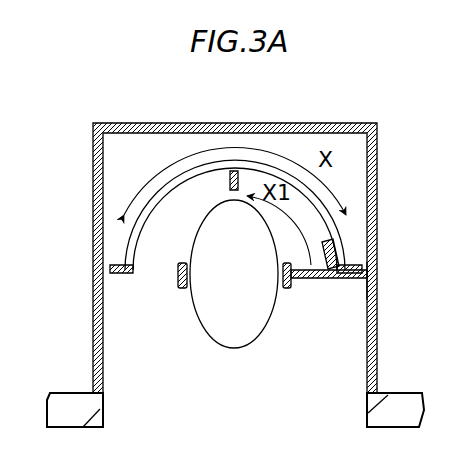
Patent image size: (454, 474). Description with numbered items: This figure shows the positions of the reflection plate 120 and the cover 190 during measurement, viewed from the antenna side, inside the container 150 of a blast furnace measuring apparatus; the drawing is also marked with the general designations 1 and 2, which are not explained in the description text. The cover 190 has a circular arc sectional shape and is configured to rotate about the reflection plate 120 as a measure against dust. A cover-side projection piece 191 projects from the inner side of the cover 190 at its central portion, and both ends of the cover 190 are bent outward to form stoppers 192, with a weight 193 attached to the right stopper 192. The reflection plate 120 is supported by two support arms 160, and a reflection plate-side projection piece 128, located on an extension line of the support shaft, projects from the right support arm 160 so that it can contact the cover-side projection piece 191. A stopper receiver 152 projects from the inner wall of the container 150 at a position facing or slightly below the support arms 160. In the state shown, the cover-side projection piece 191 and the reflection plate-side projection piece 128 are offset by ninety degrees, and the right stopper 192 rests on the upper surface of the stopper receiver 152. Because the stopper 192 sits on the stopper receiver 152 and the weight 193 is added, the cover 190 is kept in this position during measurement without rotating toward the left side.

The base 1 is at (68, 427).
The rotary apparatus 2 is at (186, 405).
The reflection plate 120 is at (250, 334).
The reflection plate-side projection piece 128 is at (300, 280).
The container 150 is at (163, 122).
The stopper receiver 152 is at (368, 282).
The support arms 160 is at (184, 290).
The cover 190 is at (130, 242).
The cover-side projection piece 191 is at (229, 181).
The stopper 192 is at (352, 264).
The weight 193 is at (338, 240).